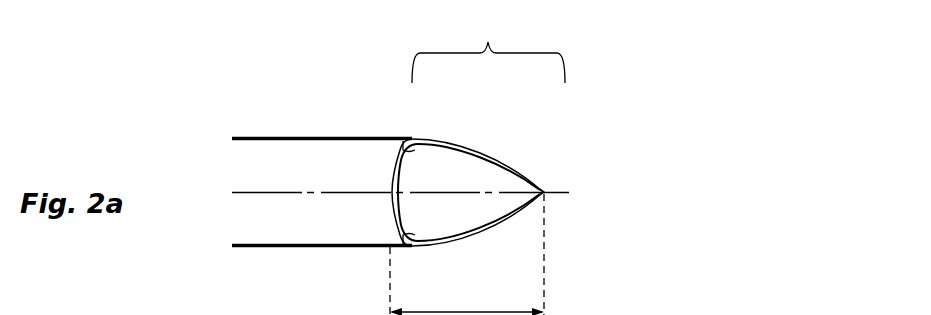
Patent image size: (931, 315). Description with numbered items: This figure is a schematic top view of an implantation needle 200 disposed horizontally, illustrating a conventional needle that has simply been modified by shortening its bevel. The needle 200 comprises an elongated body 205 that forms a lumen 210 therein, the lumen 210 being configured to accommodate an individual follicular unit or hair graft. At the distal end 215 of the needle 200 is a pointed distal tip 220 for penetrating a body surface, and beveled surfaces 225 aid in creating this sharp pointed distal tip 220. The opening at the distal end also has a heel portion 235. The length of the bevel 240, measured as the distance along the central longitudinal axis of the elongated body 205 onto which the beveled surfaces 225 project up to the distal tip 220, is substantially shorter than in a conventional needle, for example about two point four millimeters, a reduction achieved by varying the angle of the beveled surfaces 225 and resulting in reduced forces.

The implantation needle 200 is at (581, 102).
The elongated body 205 is at (302, 245).
The lumen 210 is at (463, 187).
The distal end 215 is at (488, 42).
The pointed distal tip 220 is at (545, 192).
The beveled surfaces 225 is at (447, 138).
The heel portion 235 is at (395, 177).
The length of the bevel 240 is at (467, 254).